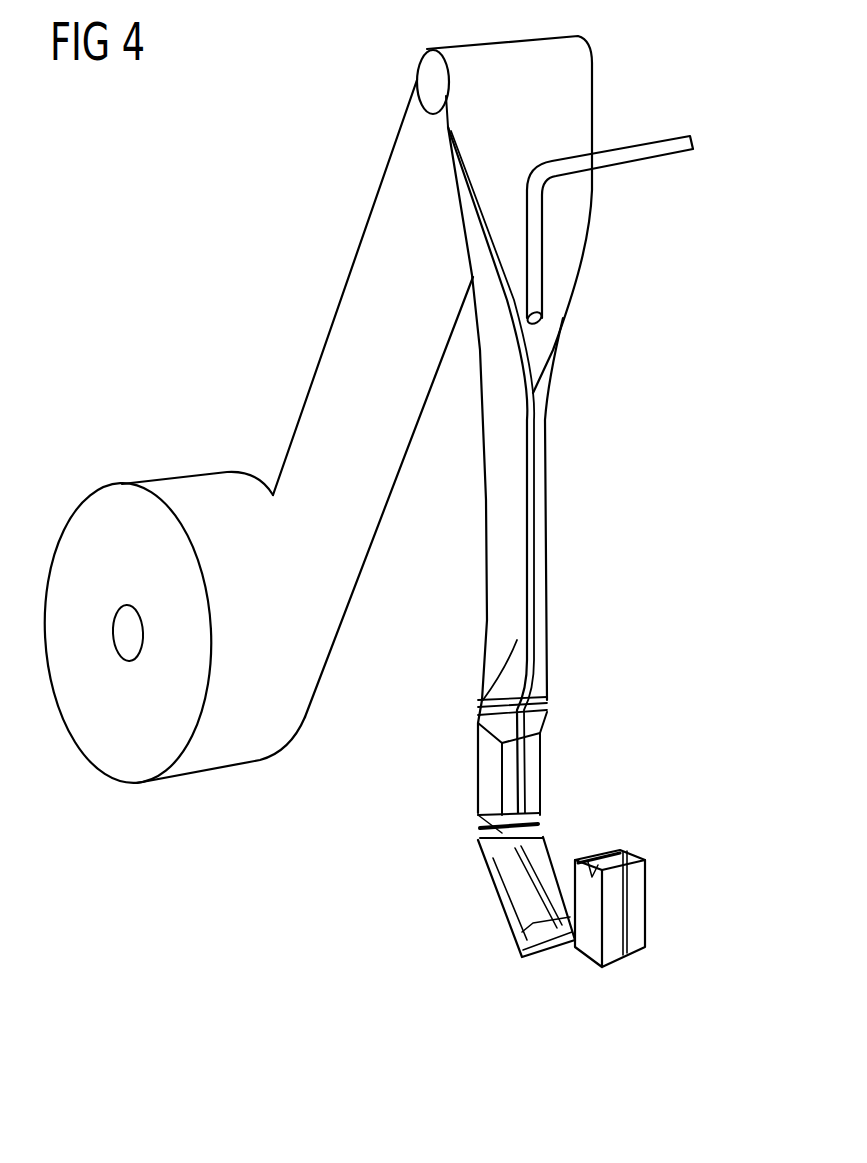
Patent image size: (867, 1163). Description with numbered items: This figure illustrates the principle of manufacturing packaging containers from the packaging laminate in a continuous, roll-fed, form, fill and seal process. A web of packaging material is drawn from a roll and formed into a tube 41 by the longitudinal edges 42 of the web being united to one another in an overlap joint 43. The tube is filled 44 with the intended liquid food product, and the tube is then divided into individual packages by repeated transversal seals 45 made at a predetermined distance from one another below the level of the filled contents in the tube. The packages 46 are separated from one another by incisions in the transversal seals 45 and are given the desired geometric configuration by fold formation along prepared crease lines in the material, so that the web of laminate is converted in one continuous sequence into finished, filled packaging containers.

The tube 41 is at (498, 522).
The longitudinal edges 42 is at (497, 247).
The overlap joint 43 is at (527, 427).
The filling 44 is at (650, 150).
The transversal seals 45 is at (548, 705).
The packages 46 is at (640, 910).